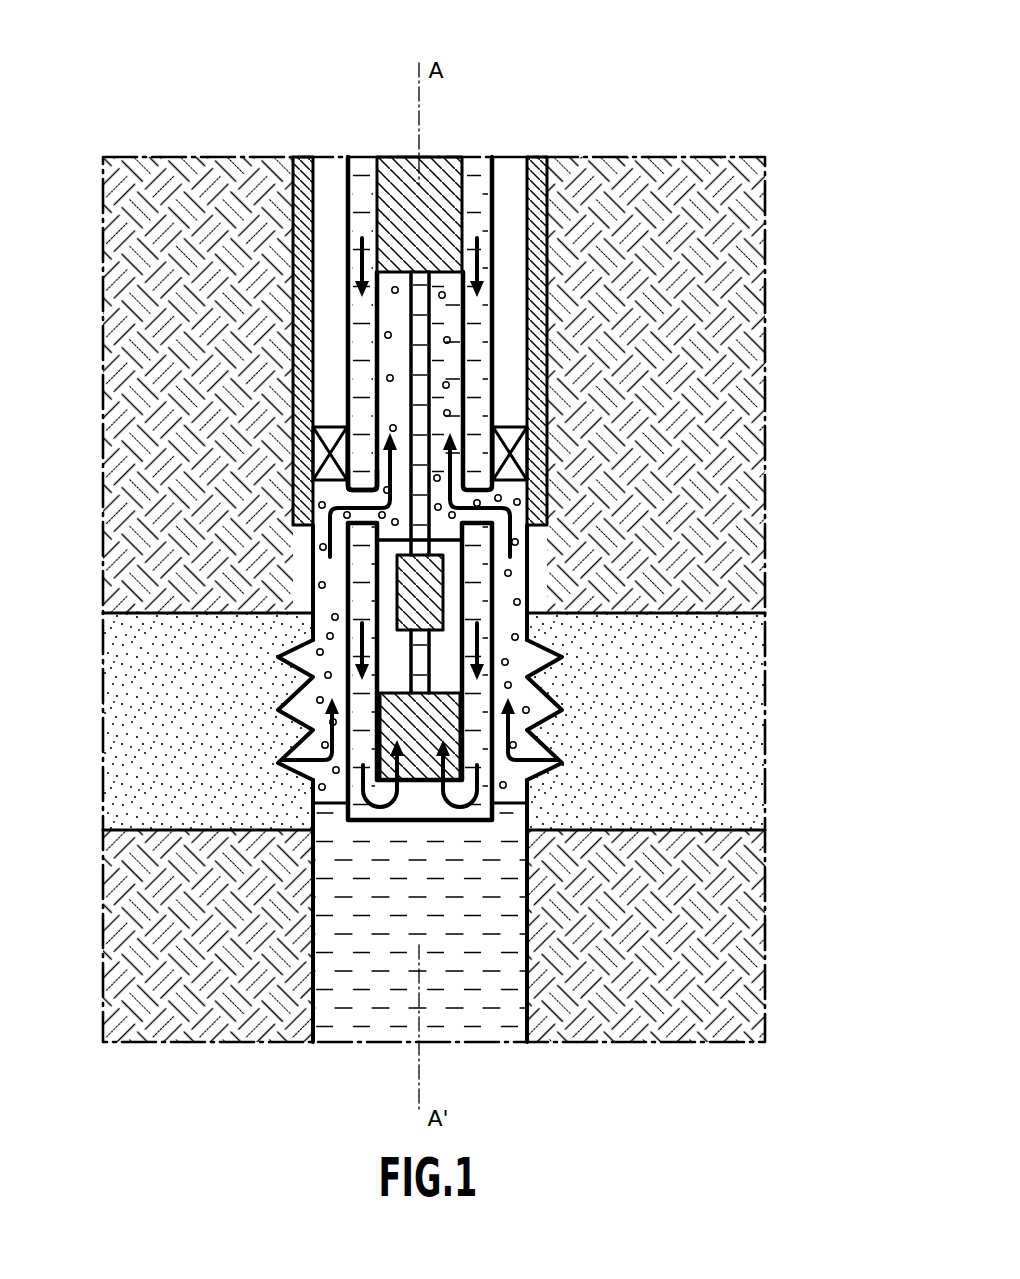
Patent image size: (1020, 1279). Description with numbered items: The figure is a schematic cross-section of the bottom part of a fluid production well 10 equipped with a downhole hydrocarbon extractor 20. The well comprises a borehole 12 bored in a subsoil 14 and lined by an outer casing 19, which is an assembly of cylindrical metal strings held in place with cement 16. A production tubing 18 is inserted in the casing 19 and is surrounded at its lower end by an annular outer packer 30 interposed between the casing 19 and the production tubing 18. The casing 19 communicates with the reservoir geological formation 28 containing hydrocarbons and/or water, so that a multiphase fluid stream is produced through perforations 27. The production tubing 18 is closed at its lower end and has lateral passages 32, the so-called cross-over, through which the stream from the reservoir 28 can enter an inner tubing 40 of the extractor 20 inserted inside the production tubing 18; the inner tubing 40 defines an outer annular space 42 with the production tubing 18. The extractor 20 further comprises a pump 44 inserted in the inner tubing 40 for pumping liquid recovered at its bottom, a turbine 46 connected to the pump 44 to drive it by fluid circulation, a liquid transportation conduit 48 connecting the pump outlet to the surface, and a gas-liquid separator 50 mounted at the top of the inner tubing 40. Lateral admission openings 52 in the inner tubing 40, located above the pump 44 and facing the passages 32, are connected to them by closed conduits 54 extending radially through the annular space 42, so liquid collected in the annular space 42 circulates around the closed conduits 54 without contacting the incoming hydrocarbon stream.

The fluid production well 10 is at (602, 104).
The borehole 12 is at (305, 325).
The subsoil 14 is at (434, 385).
The cement 16 is at (300, 222).
The production tubing 18 is at (347, 273).
The outer casing 19 is at (313, 913).
The downhole hydrocarbon extractor 20 is at (650, 593).
The perforations 27 is at (310, 657).
The reservoir geological formation 28 is at (434, 721).
The annular outer packer 30 is at (320, 450).
The lateral passages 32 is at (350, 496).
The inner tubing 40 is at (378, 380).
The outer annular space 42 is at (478, 585).
The pump 44 is at (500, 522).
The turbine 46 is at (550, 645).
The liquid transportation conduit 48 is at (432, 372).
The gas-liquid separator 50 is at (470, 228).
The lateral admission openings 52 is at (348, 523).
The closed conduits 54 is at (345, 470).